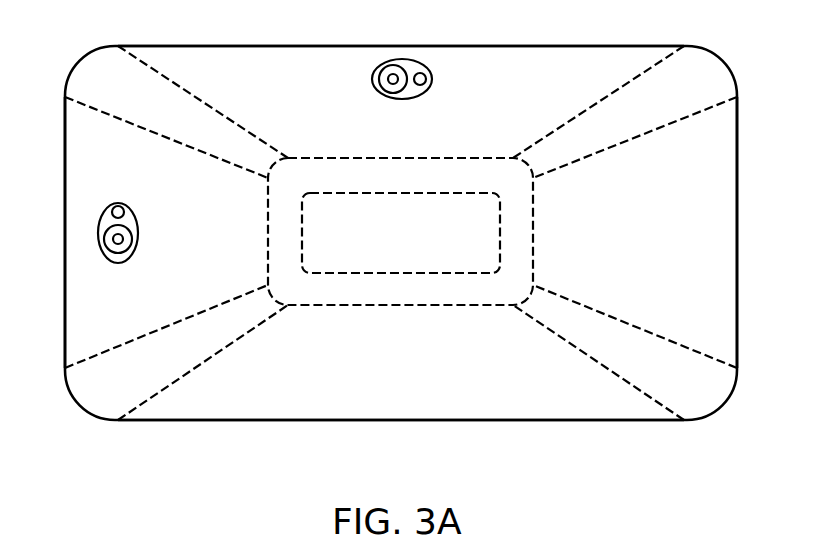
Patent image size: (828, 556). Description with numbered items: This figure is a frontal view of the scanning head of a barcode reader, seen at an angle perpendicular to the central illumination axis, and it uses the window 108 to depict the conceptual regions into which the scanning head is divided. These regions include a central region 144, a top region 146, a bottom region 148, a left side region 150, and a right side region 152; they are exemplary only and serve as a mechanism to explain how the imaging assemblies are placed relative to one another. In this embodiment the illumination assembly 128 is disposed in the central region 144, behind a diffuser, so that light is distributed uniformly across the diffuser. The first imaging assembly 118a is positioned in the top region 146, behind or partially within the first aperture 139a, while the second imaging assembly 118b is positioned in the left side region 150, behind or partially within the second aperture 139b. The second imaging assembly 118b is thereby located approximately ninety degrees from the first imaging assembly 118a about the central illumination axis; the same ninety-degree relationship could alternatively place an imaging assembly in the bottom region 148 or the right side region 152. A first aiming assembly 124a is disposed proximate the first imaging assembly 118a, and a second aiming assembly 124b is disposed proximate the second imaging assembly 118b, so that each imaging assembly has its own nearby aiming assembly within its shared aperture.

The window 108 is at (737, 190).
The first imaging assembly 118a is at (398, 106).
The second imaging assembly 118b is at (150, 234).
The first aiming assembly 124a is at (427, 82).
The second aiming assembly 124b is at (118, 207).
The illumination assembly 128 is at (500, 233).
The first aperture 139a is at (372, 79).
The second aperture 139b is at (138, 233).
The central region 144 is at (397, 293).
The top region 146 is at (233, 70).
The bottom region 148 is at (395, 397).
The left side region 150 is at (78, 235).
The right side region 152 is at (703, 223).